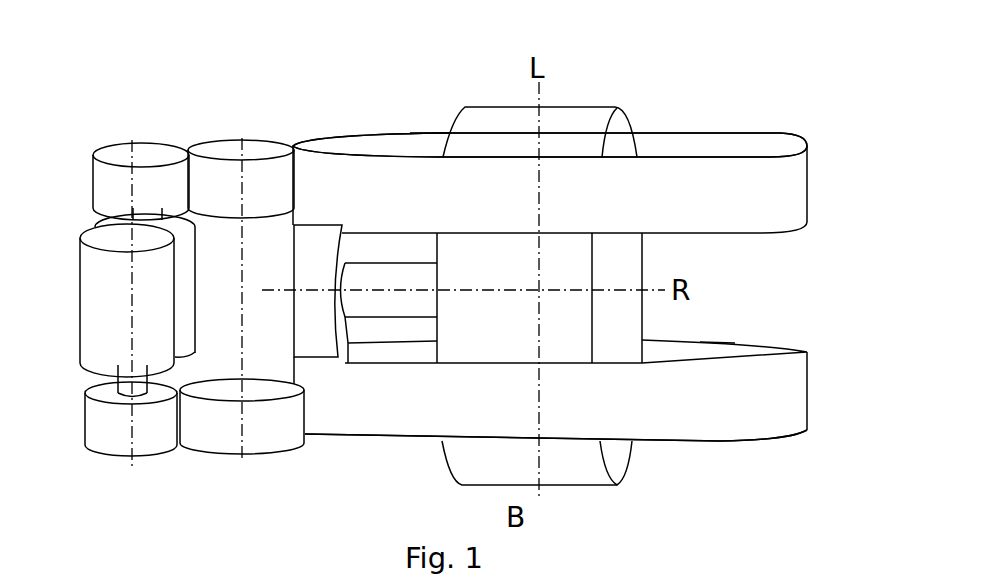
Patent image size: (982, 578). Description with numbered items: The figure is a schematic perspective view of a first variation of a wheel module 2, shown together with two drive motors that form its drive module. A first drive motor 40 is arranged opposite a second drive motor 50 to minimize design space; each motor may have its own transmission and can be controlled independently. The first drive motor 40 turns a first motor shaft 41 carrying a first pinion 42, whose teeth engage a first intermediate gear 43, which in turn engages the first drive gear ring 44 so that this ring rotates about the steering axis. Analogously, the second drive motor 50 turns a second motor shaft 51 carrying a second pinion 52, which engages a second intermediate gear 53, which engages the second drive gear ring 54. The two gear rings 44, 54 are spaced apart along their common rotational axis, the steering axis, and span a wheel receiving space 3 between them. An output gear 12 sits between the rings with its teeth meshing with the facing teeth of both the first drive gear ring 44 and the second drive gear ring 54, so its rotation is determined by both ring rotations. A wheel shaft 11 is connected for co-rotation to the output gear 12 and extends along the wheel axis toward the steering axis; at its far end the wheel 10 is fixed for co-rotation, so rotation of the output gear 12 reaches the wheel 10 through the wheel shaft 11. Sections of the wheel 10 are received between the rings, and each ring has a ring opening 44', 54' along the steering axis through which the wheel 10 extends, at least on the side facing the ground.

The wheel module 2 is at (141, 41).
The wheel receiving space 3 is at (720, 241).
The wheel 10 is at (612, 122).
The wheel shaft 11 is at (370, 275).
The output gear 12 is at (294, 312).
The first drive motor 40 is at (184, 246).
The first motor shaft 41 is at (130, 215).
The first pinion 42 is at (163, 148).
The first intermediate gear 43 is at (239, 148).
The first drive gear ring 44 is at (550, 163).
The ring opening 44' is at (430, 103).
The second drive motor 50 is at (167, 347).
The second motor shaft 51 is at (118, 392).
The second pinion 52 is at (156, 442).
The second intermediate gear 53 is at (270, 444).
The second drive gear ring 54 is at (550, 410).
The ring opening 54' is at (741, 318).